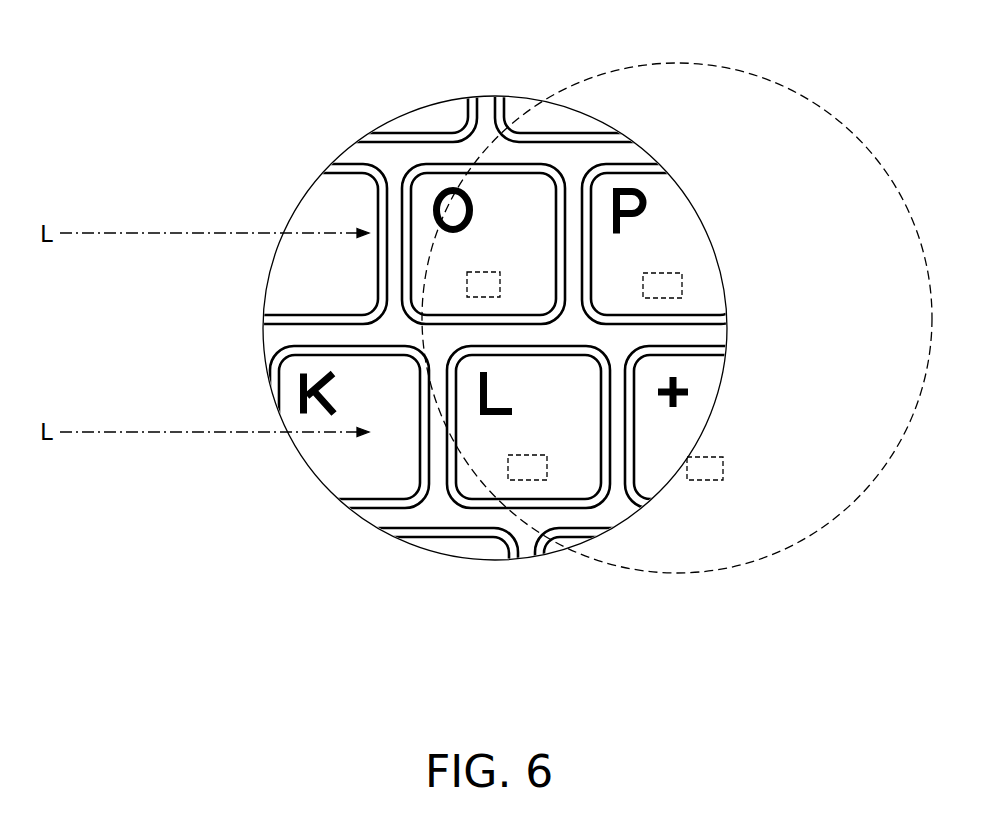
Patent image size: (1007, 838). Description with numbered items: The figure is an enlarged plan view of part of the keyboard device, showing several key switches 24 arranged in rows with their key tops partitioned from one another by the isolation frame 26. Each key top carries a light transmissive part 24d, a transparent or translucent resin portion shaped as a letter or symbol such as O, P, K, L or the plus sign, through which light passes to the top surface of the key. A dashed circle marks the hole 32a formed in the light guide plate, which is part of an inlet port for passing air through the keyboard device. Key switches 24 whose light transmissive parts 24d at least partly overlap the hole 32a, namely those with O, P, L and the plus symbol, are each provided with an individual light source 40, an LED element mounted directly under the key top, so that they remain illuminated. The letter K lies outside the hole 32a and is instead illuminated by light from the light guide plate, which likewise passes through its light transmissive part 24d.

The key switch 24 is at (318, 203).
The light transmissive part 24d is at (445, 187).
The individual light source 40 is at (488, 272).
The frame 26 is at (317, 330).
The hole 32a is at (781, 552).